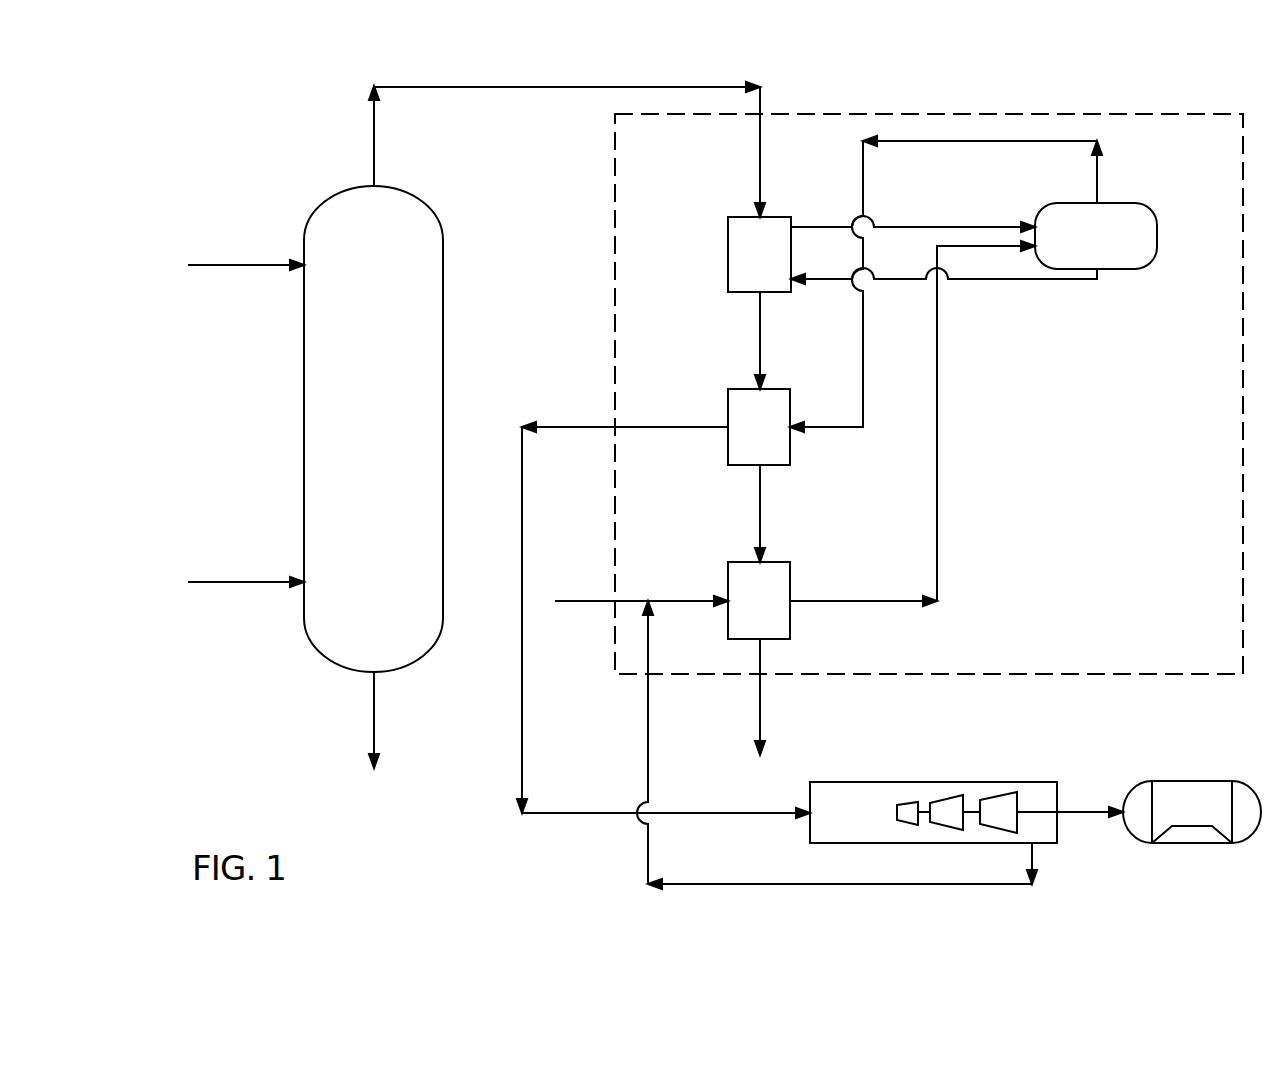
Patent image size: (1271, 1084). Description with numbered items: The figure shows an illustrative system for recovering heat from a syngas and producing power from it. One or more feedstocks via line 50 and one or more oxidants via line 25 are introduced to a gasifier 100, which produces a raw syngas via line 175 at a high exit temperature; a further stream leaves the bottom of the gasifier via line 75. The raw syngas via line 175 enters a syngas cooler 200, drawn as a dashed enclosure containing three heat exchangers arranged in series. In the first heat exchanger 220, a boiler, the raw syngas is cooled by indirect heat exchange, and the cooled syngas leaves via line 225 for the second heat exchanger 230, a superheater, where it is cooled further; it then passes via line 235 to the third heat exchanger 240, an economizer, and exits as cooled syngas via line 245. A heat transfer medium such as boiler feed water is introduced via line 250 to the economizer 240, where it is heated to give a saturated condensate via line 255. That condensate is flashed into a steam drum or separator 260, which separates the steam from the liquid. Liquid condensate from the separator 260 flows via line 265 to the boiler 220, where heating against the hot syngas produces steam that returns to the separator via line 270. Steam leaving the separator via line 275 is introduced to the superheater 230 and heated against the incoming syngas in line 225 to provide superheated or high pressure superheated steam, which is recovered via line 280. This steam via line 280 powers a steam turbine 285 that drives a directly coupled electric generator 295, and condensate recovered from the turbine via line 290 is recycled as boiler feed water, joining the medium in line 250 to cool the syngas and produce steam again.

The gasifier 100 is at (355, 433).
The feedstock line 50 is at (220, 262).
The oxidant line 25 is at (225, 580).
The raw syngas line 175 is at (374, 130).
The bottoms stream 75 is at (374, 722).
The syngas cooler 200 is at (1243, 590).
The first heat exchanger 220 is at (740, 265).
The cooled raw syngas line 225 is at (760, 323).
The second heat exchanger 230 is at (740, 437).
The cooled raw syngas line 235 is at (760, 500).
The third heat exchanger 240 is at (740, 611).
The cooled syngas line 245 is at (760, 705).
The heat transfer medium line 250 is at (570, 598).
The condensate line 255 is at (937, 500).
The steam drum 260 is at (1077, 248).
The condensate line 265 is at (1020, 283).
The steam line 270 is at (950, 226).
The steam line 275 is at (1097, 175).
The superheated steam line 280 is at (578, 423).
The steam turbine 285 is at (868, 830).
The condensate line 290 is at (955, 886).
The generator 295 is at (1210, 809).